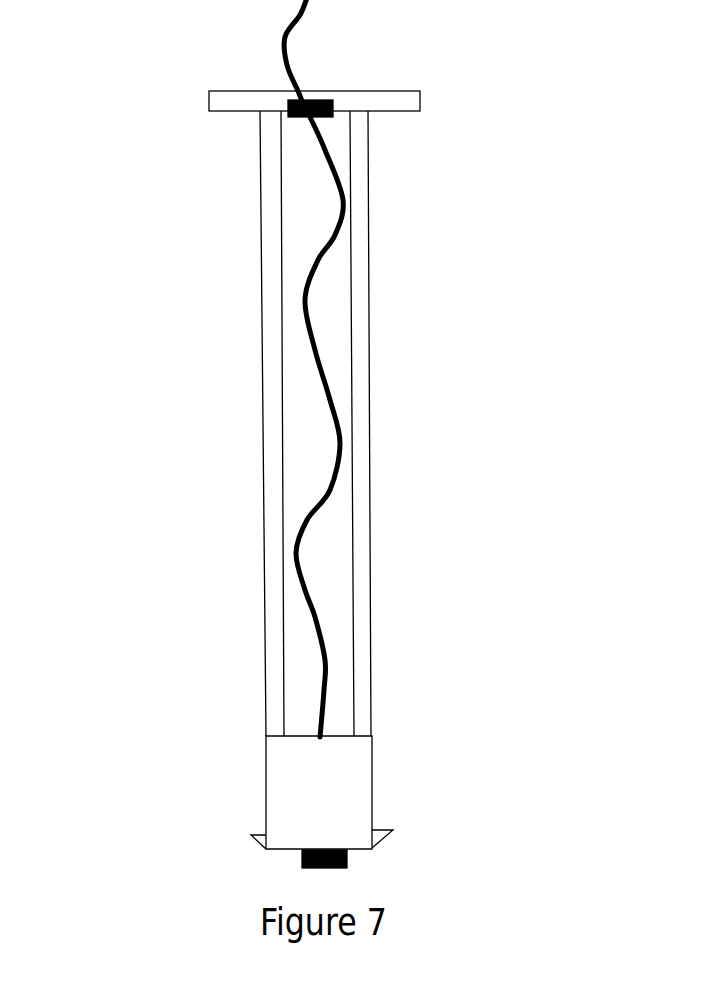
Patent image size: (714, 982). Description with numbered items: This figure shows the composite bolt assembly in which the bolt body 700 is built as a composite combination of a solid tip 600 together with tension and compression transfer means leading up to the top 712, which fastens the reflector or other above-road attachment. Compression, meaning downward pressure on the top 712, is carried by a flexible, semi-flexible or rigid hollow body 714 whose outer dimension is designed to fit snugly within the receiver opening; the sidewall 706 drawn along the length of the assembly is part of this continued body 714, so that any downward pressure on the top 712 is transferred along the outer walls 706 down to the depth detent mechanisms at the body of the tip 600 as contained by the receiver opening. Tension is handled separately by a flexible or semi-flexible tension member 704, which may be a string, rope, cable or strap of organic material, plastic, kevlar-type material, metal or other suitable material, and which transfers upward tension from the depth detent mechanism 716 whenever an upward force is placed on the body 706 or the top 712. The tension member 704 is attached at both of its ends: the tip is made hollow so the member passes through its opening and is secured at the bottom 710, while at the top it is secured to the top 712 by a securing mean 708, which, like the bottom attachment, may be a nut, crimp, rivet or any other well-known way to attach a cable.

The bolt body 700 is at (328, 463).
The top 712 is at (225, 91).
The securing mean 708 is at (288, 118).
The sidewall 706 is at (266, 645).
The hollow body 714 is at (370, 422).
The tension member 704 is at (315, 618).
The solid tip 600 is at (380, 789).
The depth detent mechanism 716 is at (393, 832).
The bottom 710 is at (347, 868).